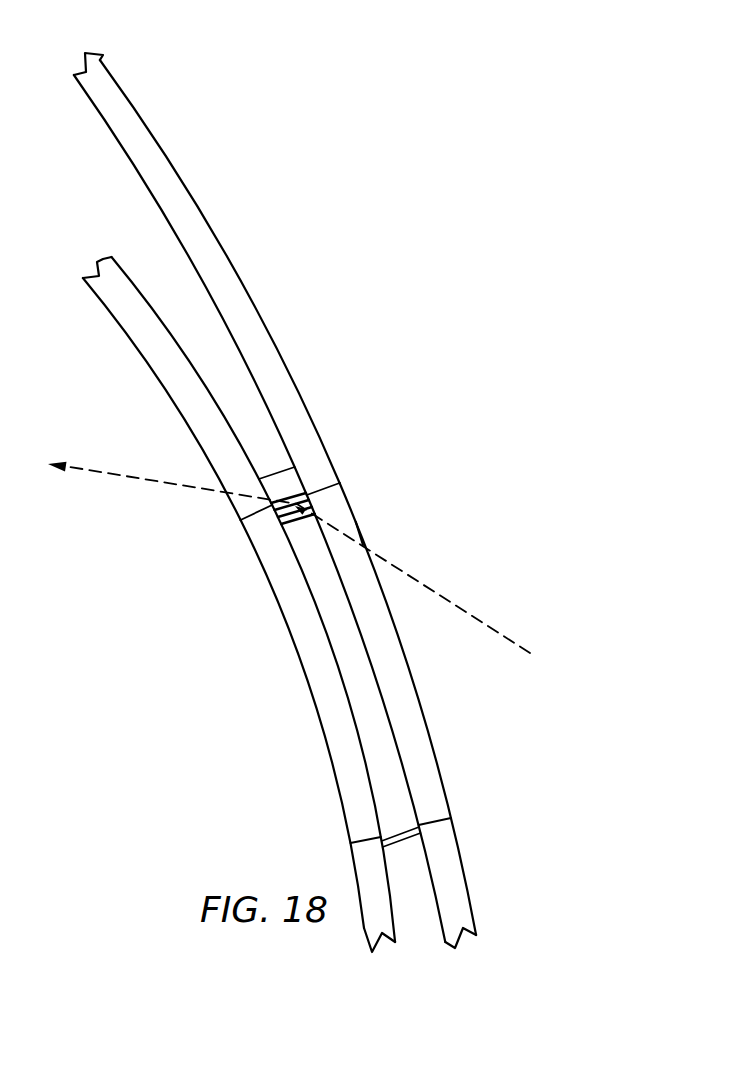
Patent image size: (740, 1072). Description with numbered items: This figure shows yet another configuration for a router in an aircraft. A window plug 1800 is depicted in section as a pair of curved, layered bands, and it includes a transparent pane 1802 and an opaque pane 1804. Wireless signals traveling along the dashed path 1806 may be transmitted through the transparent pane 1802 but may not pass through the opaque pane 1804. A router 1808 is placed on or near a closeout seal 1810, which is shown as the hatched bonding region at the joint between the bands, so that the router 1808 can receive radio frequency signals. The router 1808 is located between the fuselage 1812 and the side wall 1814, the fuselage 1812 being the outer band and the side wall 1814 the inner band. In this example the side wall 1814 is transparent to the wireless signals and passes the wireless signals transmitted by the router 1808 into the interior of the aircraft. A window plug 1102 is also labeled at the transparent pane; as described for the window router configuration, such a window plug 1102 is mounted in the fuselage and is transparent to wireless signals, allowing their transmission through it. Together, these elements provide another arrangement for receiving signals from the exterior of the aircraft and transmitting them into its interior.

The window plug 1800 is at (461, 763).
The transparent pane 1802 is at (421, 707).
The opaque pane 1804 is at (310, 687).
The path 1806 is at (467, 577).
The router 1808 is at (275, 474).
The closeout seal 1810 is at (288, 530).
The fuselage 1812 is at (286, 366).
The side wall 1814 is at (150, 358).
The window plug 1102 is at (356, 522).